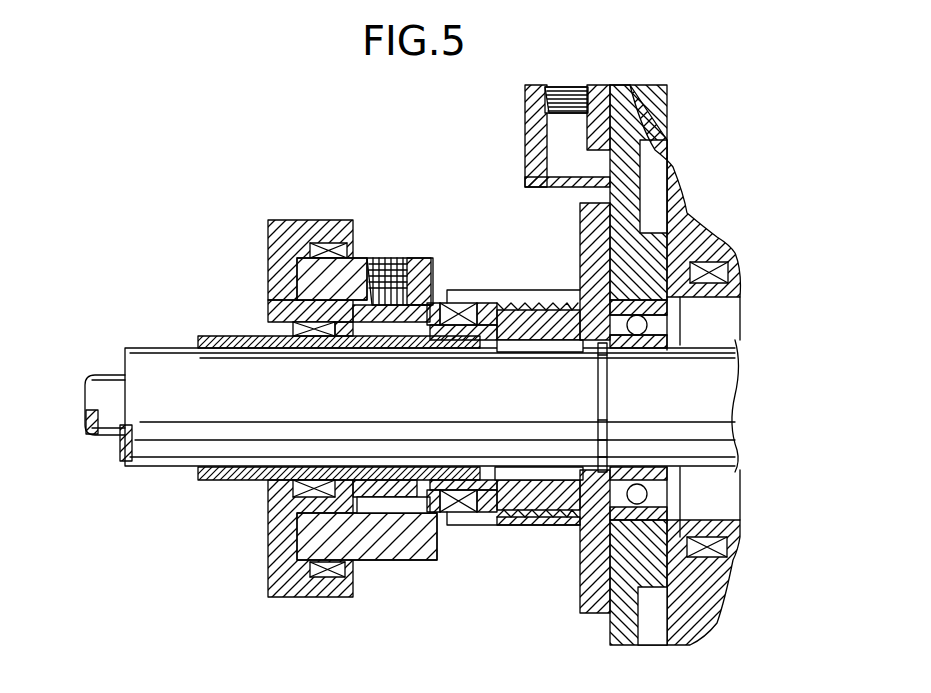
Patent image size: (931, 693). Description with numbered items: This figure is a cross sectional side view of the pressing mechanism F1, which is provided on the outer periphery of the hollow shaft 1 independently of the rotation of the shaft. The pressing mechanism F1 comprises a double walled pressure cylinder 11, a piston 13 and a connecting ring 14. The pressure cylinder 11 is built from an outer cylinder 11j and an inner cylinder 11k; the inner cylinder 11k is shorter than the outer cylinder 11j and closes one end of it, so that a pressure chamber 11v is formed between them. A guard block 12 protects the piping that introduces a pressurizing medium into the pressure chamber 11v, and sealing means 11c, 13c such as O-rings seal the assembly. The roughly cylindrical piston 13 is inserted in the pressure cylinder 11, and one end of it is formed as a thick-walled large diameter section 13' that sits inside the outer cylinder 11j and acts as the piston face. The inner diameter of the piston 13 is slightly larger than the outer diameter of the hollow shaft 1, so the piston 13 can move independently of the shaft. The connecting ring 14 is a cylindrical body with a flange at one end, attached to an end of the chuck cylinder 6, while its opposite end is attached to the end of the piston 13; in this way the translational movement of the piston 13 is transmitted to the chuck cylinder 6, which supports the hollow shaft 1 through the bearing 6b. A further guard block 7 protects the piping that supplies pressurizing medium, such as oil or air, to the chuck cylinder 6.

The hollow shaft 1 is at (168, 350).
The chuck cylinder 6 is at (693, 228).
The bearing 6b is at (610, 542).
The guard block 7 is at (528, 116).
The pressure cylinder 11 is at (507, 297).
The sealing means 11c is at (268, 322).
The outer cylinder 11j is at (540, 297).
The inner cylinder 11k is at (397, 325).
The pressure chamber 11v is at (450, 300).
The guard block 12 is at (358, 257).
The piston 13 is at (522, 380).
The large diameter section 13' is at (521, 407).
The sealing means 13c is at (490, 292).
The connecting ring 14 is at (590, 225).
The pressing mechanism F1 is at (428, 172).